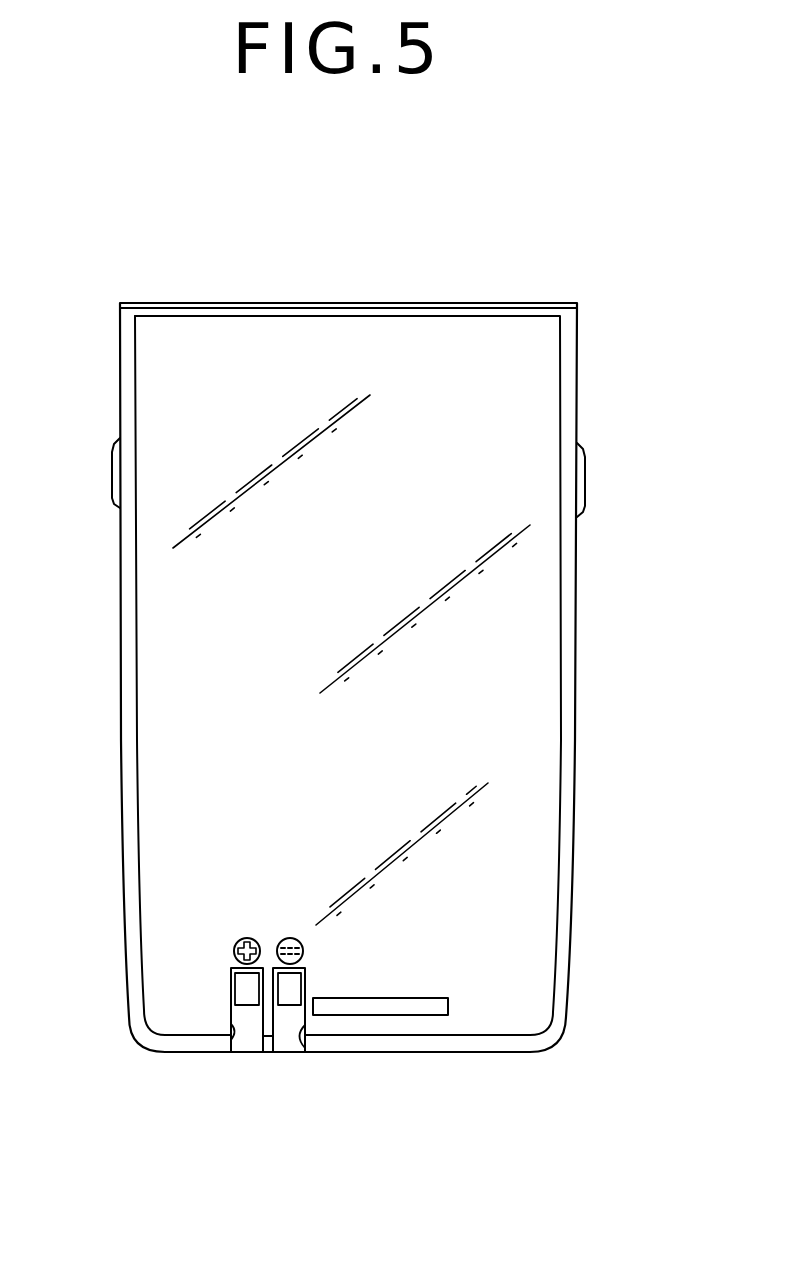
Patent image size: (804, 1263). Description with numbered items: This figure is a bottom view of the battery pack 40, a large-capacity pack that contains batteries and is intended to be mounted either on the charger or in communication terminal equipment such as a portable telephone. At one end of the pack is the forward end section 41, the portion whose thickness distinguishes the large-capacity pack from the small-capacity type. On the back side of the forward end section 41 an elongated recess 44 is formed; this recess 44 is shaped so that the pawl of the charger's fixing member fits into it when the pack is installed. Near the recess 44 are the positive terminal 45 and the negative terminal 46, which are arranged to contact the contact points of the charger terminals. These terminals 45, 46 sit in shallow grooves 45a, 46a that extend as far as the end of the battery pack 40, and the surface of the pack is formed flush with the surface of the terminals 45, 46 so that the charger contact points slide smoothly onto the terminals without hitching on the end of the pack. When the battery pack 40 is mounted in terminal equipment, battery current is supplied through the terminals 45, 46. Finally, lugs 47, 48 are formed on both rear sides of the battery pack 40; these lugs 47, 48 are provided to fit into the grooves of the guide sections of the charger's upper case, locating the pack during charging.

The battery pack 40 is at (347, 292).
The forward end section 41 is at (523, 1052).
The elongated recess 44 is at (410, 1015).
The positive terminal 45 is at (243, 998).
The groove 45a is at (233, 1035).
The negative terminal 46 is at (287, 998).
The groove 46a is at (305, 1052).
The lug 47 is at (112, 470).
The lug 48 is at (585, 477).